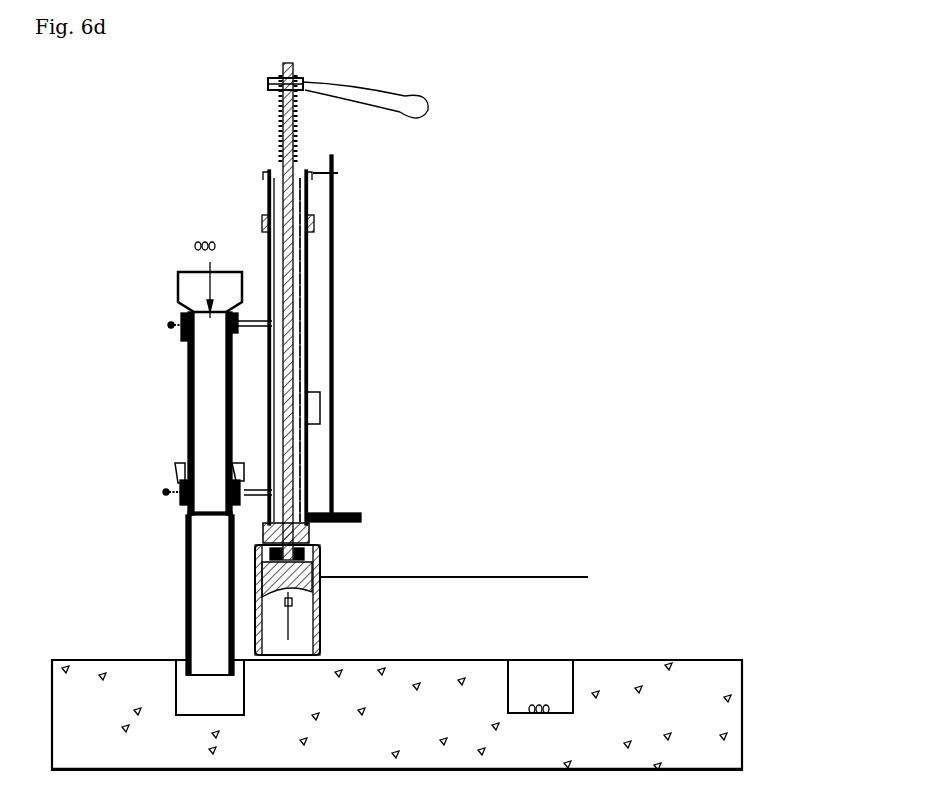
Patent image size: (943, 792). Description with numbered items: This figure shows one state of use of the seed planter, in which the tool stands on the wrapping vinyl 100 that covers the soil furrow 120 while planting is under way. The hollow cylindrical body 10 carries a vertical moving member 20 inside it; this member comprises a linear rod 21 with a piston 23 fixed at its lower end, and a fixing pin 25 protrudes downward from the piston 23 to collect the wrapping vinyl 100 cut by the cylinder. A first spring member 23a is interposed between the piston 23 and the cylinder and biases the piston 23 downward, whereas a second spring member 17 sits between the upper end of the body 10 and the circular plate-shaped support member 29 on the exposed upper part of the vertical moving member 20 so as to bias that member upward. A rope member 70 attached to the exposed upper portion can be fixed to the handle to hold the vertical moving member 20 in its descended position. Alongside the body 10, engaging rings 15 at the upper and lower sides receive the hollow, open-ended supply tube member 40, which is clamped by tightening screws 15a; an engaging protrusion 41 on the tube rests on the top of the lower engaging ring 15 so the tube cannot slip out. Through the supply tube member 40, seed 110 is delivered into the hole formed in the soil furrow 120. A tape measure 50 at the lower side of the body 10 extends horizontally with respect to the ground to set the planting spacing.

The body 10 is at (267, 178).
The engaging ring 15 is at (186, 330).
The tightening screw 15a is at (170, 326).
The second spring member 17 is at (280, 122).
The vertical moving member 20 is at (324, 359).
The rod 21 is at (292, 207).
The piston 23 is at (314, 537).
The first spring member 23a is at (345, 513).
The fixing pin 25 is at (322, 606).
The support member 29 is at (300, 76).
The supply tube member 40 is at (190, 405).
The engaging protrusion 41 is at (178, 463).
The tape measure 50 is at (513, 578).
The rope member 70 is at (410, 92).
The wrapping vinyl 100 is at (688, 660).
The seed 110 is at (192, 246).
The soil furrow 120 is at (745, 713).